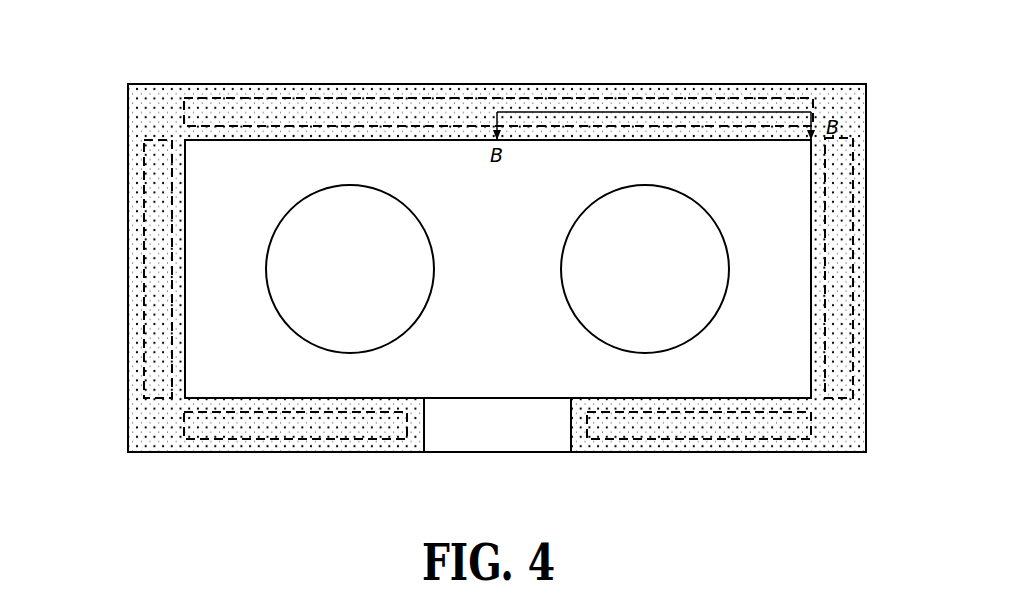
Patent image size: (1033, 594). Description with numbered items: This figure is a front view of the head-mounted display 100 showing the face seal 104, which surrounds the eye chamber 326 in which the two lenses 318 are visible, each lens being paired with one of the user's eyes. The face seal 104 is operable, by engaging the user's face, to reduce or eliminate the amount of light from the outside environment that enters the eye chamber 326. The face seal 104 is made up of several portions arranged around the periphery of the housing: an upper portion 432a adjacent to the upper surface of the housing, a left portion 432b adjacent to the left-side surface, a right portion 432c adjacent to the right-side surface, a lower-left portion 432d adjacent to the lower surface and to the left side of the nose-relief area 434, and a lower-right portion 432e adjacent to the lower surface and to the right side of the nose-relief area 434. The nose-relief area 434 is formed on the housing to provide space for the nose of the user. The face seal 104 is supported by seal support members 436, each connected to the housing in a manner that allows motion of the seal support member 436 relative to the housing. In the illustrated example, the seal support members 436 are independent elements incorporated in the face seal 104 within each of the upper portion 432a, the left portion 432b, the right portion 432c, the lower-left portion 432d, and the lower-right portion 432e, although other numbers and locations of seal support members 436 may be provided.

The head-mounted display 100 is at (108, 66).
The face seal 104 is at (874, 101).
The lenses 318 is at (370, 279).
The eye chamber 326 is at (516, 207).
The upper portion 432a is at (497, 84).
The left portion 432b is at (128, 231).
The right portion 432c is at (866, 231).
The lower-left portion 432d is at (222, 454).
The lower-right portion 432e is at (796, 454).
The nose-relief area 434 is at (526, 440).
The seal support members 436 is at (240, 104).